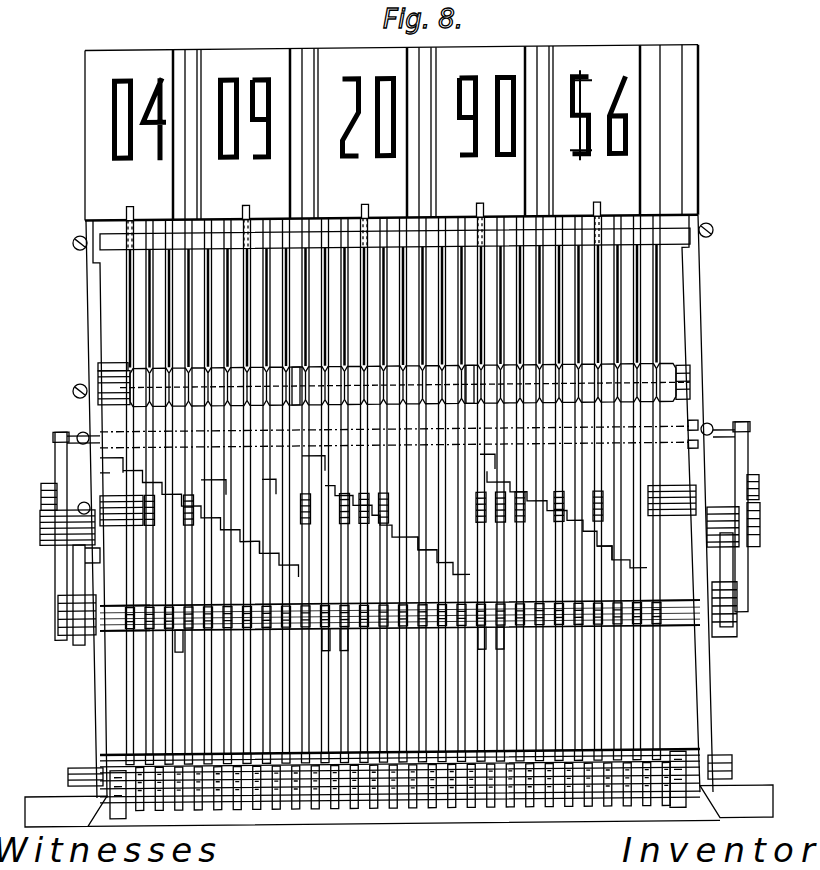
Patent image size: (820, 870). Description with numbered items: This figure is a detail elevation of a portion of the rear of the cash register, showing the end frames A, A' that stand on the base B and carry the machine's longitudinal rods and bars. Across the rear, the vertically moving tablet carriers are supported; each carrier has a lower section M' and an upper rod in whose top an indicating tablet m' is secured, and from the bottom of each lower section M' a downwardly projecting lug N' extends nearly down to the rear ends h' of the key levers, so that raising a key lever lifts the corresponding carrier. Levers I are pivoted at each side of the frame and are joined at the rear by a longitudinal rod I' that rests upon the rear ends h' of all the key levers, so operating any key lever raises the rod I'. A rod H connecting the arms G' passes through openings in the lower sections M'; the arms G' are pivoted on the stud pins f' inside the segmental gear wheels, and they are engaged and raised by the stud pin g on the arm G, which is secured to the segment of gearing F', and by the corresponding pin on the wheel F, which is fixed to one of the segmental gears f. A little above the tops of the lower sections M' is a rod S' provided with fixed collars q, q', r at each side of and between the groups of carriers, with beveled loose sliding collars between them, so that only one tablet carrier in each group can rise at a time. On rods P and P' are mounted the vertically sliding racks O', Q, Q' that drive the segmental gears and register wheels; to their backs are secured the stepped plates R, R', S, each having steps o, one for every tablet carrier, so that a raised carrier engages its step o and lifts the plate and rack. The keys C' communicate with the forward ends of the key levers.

The indicating tablets m' is at (375, 151).
The end frame A is at (78, 510).
The end frame A' is at (709, 504).
The downwardly projecting lugs N' is at (412, 490).
The longitudinal rod I' is at (400, 526).
The rod P is at (339, 465).
The rod P' is at (672, 514).
The fixed collar q' is at (371, 371).
The rod S' is at (113, 353).
The fixed collar r is at (472, 366).
The lower sections of the tablet carriers M' is at (230, 494).
The stepped plate R is at (211, 524).
The stepped plate R' is at (397, 529).
The stepped plate S is at (567, 520).
The steps o is at (422, 550).
The fixed collar q is at (616, 548).
The rod H is at (691, 635).
The vertically sliding rack O' is at (198, 649).
The vertically sliding rack Q is at (350, 646).
The vertically sliding rack Q' is at (505, 643).
The wheel F is at (58, 536).
The segment of gearing F' is at (752, 513).
The segments of gears f is at (399, 489).
The stud pins f' is at (398, 530).
The hub block C is at (50, 528).
The keys C' is at (56, 583).
The arms G' is at (403, 588).
The arm G is at (747, 546).
The stud pin g is at (735, 615).
The rear ends of the key levers h' is at (354, 810).
The levers I is at (389, 770).
The base B is at (399, 806).